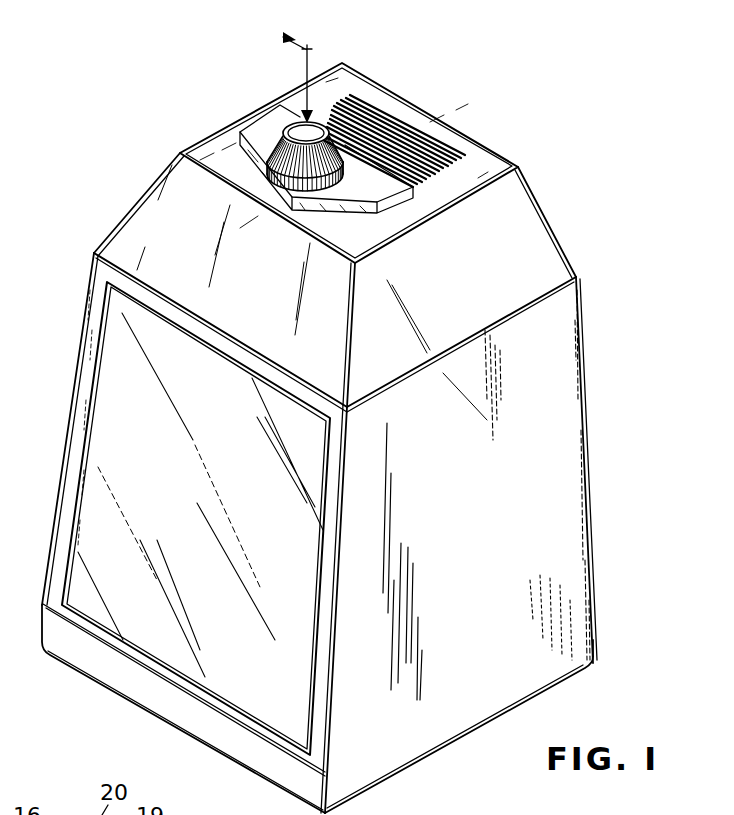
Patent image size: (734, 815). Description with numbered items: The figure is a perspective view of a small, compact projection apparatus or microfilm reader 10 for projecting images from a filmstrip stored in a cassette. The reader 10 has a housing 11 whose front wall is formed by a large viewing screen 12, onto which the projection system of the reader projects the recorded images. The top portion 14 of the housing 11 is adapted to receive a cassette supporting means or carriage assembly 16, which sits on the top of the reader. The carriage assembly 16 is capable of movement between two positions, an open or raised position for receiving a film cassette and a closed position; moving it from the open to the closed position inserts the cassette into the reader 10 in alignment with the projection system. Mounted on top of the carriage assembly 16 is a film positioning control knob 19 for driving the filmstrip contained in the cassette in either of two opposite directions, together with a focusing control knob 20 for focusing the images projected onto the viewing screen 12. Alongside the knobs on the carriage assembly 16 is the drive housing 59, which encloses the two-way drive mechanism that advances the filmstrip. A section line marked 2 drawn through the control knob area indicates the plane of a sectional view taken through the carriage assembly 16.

The section line 2- 2 is at (284, 69).
The microfilm reader 10 is at (327, 414).
The housing 11 is at (573, 368).
The viewing screen 12 is at (95, 465).
The top portion 14 is at (452, 131).
The carriage assembly 16 is at (238, 136).
The film positioning control knob 19 is at (277, 189).
The focusing control knob 20 is at (280, 162).
The drive housing 59 is at (415, 195).